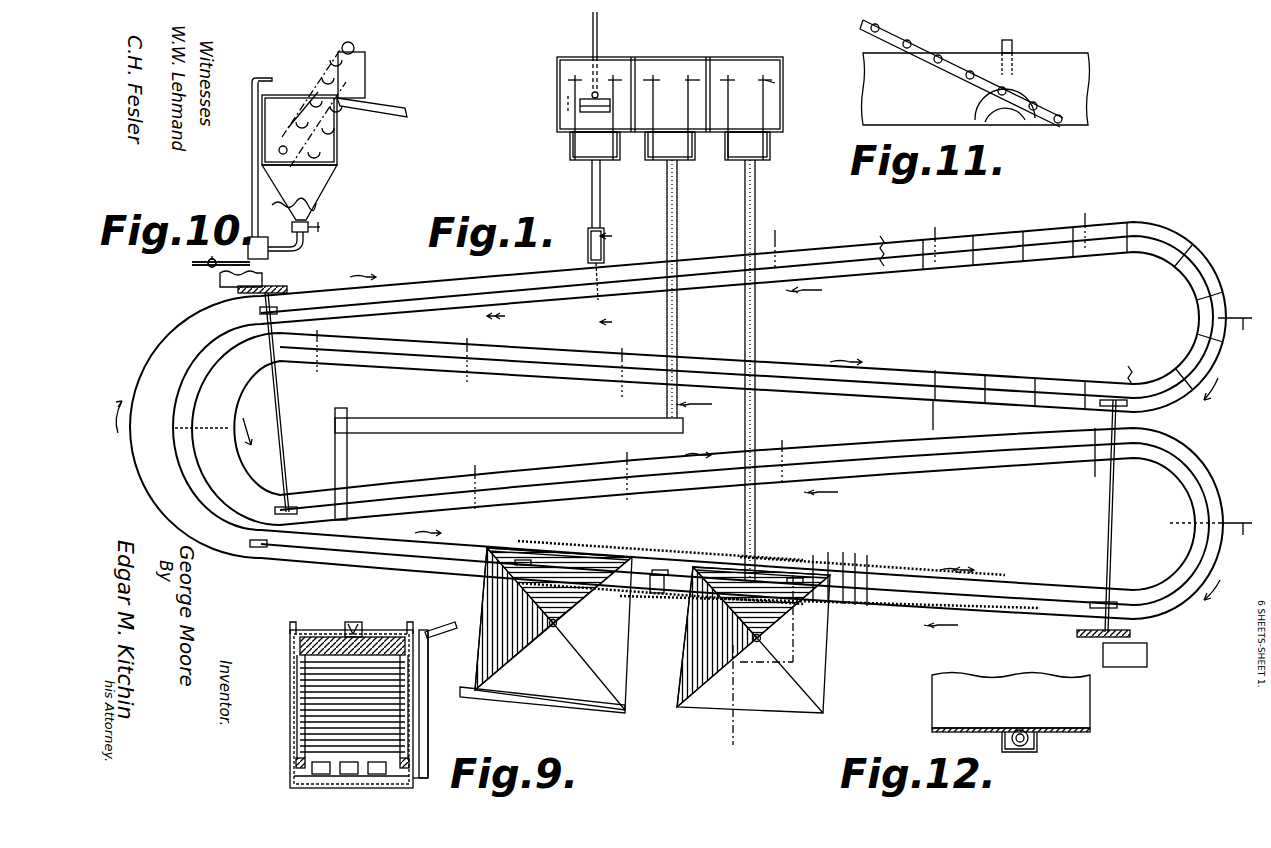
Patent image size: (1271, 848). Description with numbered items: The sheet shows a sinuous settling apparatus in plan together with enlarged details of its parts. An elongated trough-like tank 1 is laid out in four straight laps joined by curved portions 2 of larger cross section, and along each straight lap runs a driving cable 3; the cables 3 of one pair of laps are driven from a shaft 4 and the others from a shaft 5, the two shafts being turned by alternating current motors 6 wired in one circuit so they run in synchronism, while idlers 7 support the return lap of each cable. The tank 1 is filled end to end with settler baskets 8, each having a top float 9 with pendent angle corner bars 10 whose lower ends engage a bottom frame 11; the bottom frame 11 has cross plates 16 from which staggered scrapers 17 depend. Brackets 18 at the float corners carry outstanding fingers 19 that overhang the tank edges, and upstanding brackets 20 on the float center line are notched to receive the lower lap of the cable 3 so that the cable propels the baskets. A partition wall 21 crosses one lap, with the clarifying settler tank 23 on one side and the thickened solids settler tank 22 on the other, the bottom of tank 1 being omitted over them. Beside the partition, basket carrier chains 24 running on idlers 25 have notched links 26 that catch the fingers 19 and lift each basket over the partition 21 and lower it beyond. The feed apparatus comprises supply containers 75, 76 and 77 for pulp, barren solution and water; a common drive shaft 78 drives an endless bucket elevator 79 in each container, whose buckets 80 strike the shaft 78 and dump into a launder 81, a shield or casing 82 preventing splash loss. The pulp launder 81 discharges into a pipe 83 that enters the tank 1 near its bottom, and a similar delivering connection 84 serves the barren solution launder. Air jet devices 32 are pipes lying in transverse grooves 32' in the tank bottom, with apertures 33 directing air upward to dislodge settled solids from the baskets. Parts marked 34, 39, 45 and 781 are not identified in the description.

In FIG. 1, the tank 1 is at (830, 256).
In FIG. 9, the tank 1 is at (290, 652).
In FIG. 1, the curved portions 2 is at (136, 468).
In FIG. 1, the driving cable 3 is at (452, 287).
In FIG. 9, the driving cable 3 is at (358, 628).
In FIG. 1, the shaft 4 is at (1110, 506).
In FIG. 1, the shaft 5 is at (278, 398).
In FIG. 1, the alternating current motors 6 is at (220, 278).
In FIG. 1, the idlers 7 is at (522, 560).
In FIG. 1, the settler baskets 8 is at (1040, 260).
In FIG. 9, the settler baskets 8 is at (294, 706).
In FIG. 1, the top float 9 is at (619, 278).
In FIG. 9, the top float 9 is at (318, 640).
In FIG. 1, the pendent corner bars 10 is at (572, 58).
In FIG. 9, the bottom frame 11 is at (294, 738).
In FIG. 9, the cross plates 16 is at (398, 750).
In FIG. 9, the scrapers 17 is at (312, 770).
In FIG. 11, the brackets 18 is at (1014, 52).
In FIG. 11, the finger 19 is at (1019, 34).
In FIG. 9, the finger 19 is at (291, 622).
In FIG. 9, the brackets 20 is at (368, 632).
In FIG. 1, the partition wall 21 is at (657, 595).
In FIG. 9, the partition wall 21 is at (352, 622).
In FIG. 1, the thickened solids settler tank 22 is at (630, 665).
In FIG. 1, the clarifying settler tank 23 is at (826, 665).
In FIG. 1, the basket carrier chain 24 is at (598, 538).
In FIG. 11, the basket carrier chain 24 is at (976, 89).
In FIG. 1, the idlers 25 is at (540, 536).
In FIG. 11, the idlers 25 is at (1020, 125).
In FIG. 11, the notches 26 is at (925, 48).
In FIG. 1, the air jet devices 32 is at (713, 376).
In FIG. 9, the air jet devices 32 is at (439, 741).
In FIG. 12, the air jet devices 32 is at (1011, 728).
In FIG. 12, the transverse groove 32' is at (1049, 746).
In FIG. 1, the apertures 33 is at (858, 598).
In FIG. 12, the apertures 33 is at (1020, 730).
In FIG. 1, the hub 34 is at (761, 638).
In FIG. 1, the platform 39 is at (556, 704).
In FIG. 1, the hub 45 is at (557, 624).
In FIG. 1, the supply container 75 is at (565, 115).
In FIG. 10, the supply container 75 is at (340, 137).
In FIG. 1, the supply container 76 is at (685, 57).
In FIG. 1, the supply container 77 is at (783, 82).
In FIG. 1, the drive shaft 78 is at (565, 82).
In FIG. 10, the drive shaft 78 is at (345, 46).
In FIG. 1, the elevator 79 is at (660, 82).
In FIG. 10, the elevator 79 is at (316, 78).
In FIG. 1, the buckets 80 is at (580, 110).
In FIG. 10, the buckets 80 is at (354, 48).
In FIG. 1, the launder 81 is at (590, 178).
In FIG. 10, the launder 81 is at (398, 106).
In FIG. 9, the launder 81 is at (455, 622).
In FIG. 1, the shield or casing 82 is at (572, 152).
In FIG. 10, the shield or casing 82 is at (366, 74).
In FIG. 1, the pipe 83 is at (588, 258).
In FIG. 9, the pipe 83 is at (429, 660).
In FIG. 1, the delivering connection 84 is at (347, 478).
In FIG. 1, the partition 781 is at (780, 84).